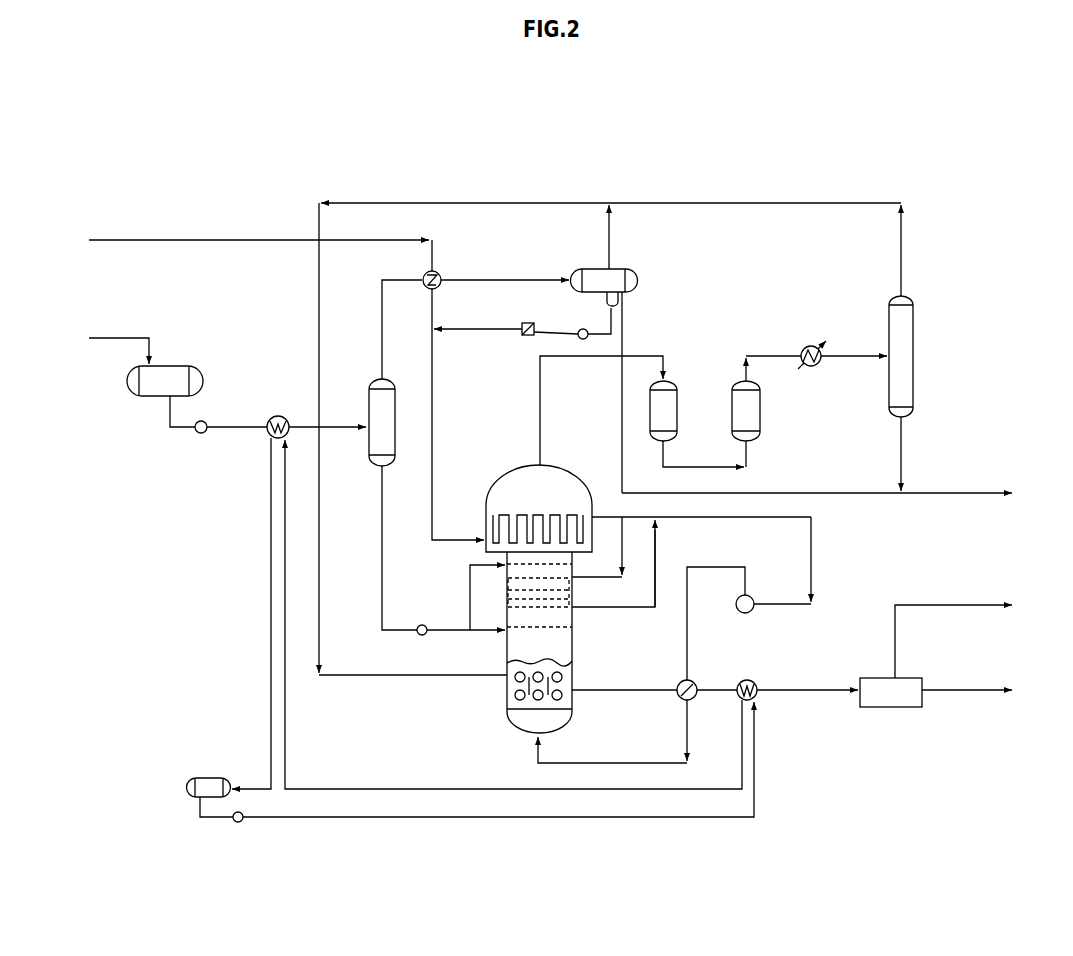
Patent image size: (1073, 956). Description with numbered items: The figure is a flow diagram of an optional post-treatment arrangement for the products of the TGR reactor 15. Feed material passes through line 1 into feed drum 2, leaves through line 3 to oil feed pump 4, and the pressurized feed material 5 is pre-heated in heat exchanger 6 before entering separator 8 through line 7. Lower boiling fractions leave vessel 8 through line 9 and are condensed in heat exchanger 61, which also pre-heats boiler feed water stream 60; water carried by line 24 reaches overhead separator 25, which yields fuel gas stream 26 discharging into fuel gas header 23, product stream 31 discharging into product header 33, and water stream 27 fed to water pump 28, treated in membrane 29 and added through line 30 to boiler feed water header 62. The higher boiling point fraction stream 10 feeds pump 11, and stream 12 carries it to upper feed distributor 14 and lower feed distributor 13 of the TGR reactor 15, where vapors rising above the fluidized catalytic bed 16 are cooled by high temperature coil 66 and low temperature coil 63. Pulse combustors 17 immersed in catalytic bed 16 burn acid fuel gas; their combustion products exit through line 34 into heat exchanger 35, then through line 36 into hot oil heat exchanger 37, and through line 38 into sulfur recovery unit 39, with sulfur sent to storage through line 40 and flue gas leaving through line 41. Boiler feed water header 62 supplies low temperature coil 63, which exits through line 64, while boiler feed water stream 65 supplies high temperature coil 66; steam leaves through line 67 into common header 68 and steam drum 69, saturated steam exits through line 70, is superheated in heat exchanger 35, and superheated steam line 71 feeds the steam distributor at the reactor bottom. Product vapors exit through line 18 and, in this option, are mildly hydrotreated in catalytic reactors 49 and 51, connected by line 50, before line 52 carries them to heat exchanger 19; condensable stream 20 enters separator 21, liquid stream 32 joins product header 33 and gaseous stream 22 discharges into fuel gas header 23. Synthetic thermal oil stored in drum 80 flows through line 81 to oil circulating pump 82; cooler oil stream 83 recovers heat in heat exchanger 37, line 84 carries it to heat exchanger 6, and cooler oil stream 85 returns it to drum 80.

The feed line 1 is at (117, 341).
The feed drum 2 is at (126, 394).
The feed drum outlet line 3 is at (162, 413).
The oil feed pump 4 is at (194, 442).
The feed material 5 is at (238, 438).
The heat exchanger 6 is at (271, 417).
The separator inlet line 7 is at (339, 421).
The separator 8 is at (364, 449).
The overhead line 9 is at (375, 319).
The higher boiling point fraction stream 10 is at (374, 539).
The pump 11 is at (414, 643).
The reactor feed stream 12 is at (462, 639).
The lower feed distributor 13 is at (560, 632).
The upper feed distributor 14 is at (524, 569).
The TGR reactor 15 is at (500, 732).
The fluidized catalytic bed 16 is at (559, 668).
The pulse combustors 17 is at (513, 694).
The reactor product line 18 is at (533, 393).
The heat exchanger 19 is at (807, 344).
The condensable stream 20 is at (851, 368).
The separator 21 is at (878, 389).
The gaseous stream 22 is at (887, 244).
The fuel gas header 23 is at (497, 213).
The water line 24 is at (498, 290).
The overhead separator 25 is at (650, 292).
The fuel gas stream 26 is at (603, 225).
The water stream 27 is at (603, 324).
The water pump 28 is at (571, 339).
The membrane 29 is at (514, 347).
The treated water line 30 is at (470, 339).
The product stream 31 is at (611, 394).
The liquid stream 32 is at (889, 449).
The product header 33 is at (972, 506).
The combustion products line 34 is at (636, 697).
The heat exchanger 35 is at (676, 680).
The combustion products line 36 is at (724, 697).
The hot oil heat exchanger 37 is at (758, 681).
The sulfur recovery unit inlet line 38 is at (814, 697).
The sulfur recovery unit 39 is at (892, 713).
The sulfur line 40 is at (972, 698).
The flue gas line 41 is at (977, 612).
The catalytic reactor 49 is at (685, 378).
The connecting line 50 is at (684, 466).
The catalytic reactor 51 is at (764, 421).
The hydrotreated product line 52 is at (761, 350).
The boiler feed water stream 60 is at (224, 247).
The heat exchanger 61 is at (420, 294).
The boiler feed water header 62 is at (436, 547).
The low temperature coil 63 is at (512, 510).
The low temperature coil outlet line 64 is at (604, 511).
The boiler feed water stream 65 is at (614, 546).
The steam generation high temperature coil 66 is at (576, 599).
The steam line 67 is at (659, 565).
The common header 68 is at (802, 542).
The steam drum 69 is at (740, 617).
The saturated steam line 70 is at (708, 574).
The superheated steam line 71 is at (531, 752).
The thermal oil drum 80 is at (178, 799).
The thermal oil line 81 is at (196, 824).
The oil circulating pump 82 is at (230, 829).
The cooler oil stream 83 is at (563, 821).
The hot oil line 84 is at (732, 755).
The cooler oil stream 85 is at (262, 621).